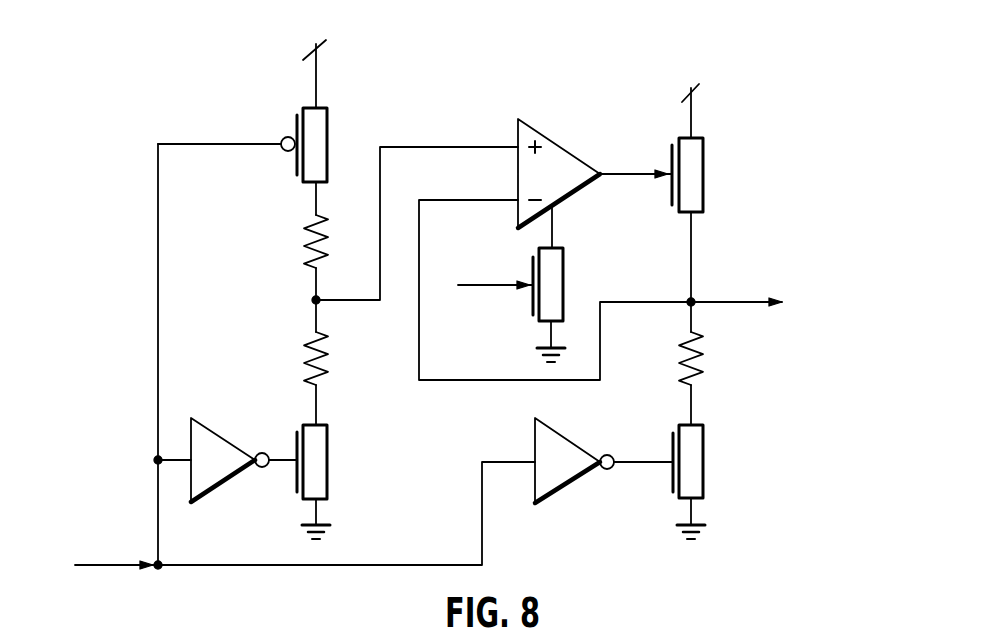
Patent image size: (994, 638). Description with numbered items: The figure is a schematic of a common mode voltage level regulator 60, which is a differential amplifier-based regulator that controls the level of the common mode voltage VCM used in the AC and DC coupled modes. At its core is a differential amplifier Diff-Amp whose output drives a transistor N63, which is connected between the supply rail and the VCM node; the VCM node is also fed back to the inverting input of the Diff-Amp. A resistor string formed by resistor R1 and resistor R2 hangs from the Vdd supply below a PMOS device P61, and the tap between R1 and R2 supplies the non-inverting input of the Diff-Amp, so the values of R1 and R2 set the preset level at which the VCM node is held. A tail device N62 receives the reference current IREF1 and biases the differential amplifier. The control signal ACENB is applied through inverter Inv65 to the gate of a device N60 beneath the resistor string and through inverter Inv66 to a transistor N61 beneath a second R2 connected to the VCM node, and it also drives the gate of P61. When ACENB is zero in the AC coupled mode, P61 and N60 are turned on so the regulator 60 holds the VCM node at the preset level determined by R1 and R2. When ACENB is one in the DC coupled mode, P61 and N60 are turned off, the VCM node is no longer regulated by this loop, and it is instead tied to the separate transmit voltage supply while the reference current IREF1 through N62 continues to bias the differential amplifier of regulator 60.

The PMOS device P61 is at (323, 133).
The resistor R1 is at (300, 246).
The resistor R2 is at (300, 366).
The transistor device N60 is at (327, 448).
The NMOS transistor N61 is at (697, 448).
The tail device N62 is at (559, 272).
The NMOS transistor N63 is at (699, 162).
The inverter Inv65 is at (218, 476).
The inverter Inv66 is at (562, 476).
The differential amplifier Diff-Amp is at (548, 157).
The supply voltage Vdd is at (307, 59).
The common mode voltage VCM is at (736, 287).
The reference current IREF1 is at (493, 299).
The AC enable signal ACENB is at (80, 550).
The common mode voltage level regulator 60 is at (762, 519).